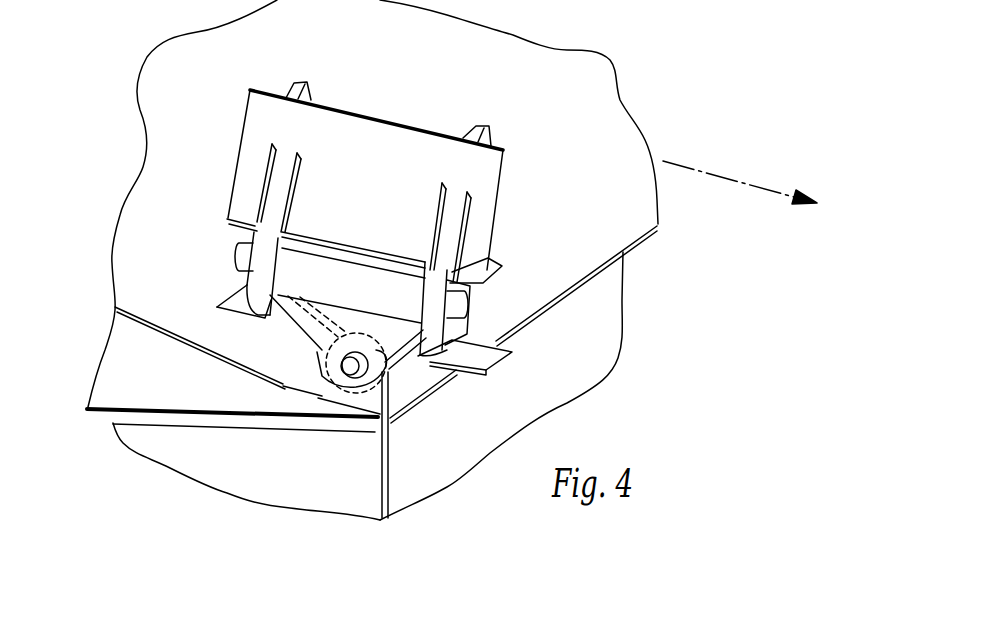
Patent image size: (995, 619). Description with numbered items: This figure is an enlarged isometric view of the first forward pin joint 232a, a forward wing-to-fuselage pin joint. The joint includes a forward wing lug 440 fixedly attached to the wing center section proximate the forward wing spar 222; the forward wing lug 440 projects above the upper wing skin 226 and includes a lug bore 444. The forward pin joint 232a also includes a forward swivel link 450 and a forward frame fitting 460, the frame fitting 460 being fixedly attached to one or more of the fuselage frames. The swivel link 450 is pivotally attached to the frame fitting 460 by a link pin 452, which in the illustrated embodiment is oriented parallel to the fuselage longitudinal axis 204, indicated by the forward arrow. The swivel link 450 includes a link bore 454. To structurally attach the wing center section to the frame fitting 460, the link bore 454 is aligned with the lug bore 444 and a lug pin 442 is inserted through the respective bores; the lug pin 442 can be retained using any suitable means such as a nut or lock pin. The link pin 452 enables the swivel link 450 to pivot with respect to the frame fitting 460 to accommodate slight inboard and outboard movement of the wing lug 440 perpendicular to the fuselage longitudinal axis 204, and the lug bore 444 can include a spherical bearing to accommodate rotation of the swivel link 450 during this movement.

The fuselage longitudinal axis 204 is at (757, 187).
The forward wing spar 222 is at (604, 338).
The upper wing skin 226 is at (140, 233).
The first forward pin joint 232a is at (492, 101).
The forward wing lug 440 is at (355, 372).
The lug pin 442 is at (318, 353).
The lug bore 444 is at (385, 346).
The forward swivel link 450 is at (320, 343).
The link pin 452 is at (470, 305).
The link bore 454 is at (386, 372).
The forward frame fitting 460 is at (497, 213).